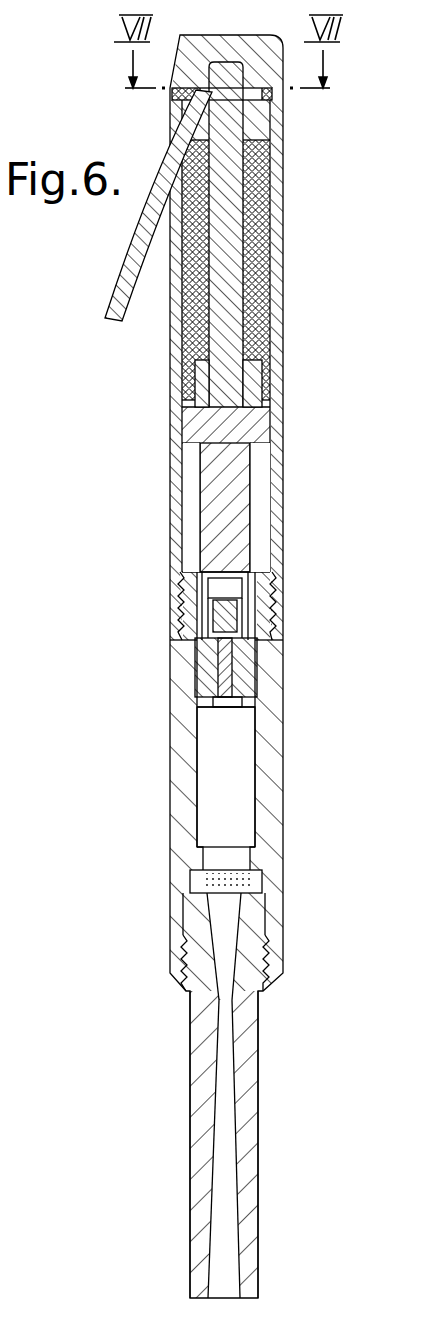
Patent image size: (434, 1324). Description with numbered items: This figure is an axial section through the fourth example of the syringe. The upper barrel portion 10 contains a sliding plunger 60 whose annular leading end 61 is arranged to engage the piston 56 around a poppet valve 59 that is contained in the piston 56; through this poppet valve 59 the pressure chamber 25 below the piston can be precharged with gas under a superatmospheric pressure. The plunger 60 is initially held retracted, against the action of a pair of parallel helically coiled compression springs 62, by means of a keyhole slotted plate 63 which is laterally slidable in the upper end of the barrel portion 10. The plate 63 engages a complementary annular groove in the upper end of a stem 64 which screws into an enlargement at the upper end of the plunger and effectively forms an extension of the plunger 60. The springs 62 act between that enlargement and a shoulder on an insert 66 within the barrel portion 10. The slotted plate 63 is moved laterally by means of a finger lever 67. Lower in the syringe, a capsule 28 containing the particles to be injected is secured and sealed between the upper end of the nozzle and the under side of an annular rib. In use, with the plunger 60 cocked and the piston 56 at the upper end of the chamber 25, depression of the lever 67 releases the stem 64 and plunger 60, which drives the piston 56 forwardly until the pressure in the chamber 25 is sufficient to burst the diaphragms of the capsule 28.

The upper barrel portion 10 is at (283, 500).
The pressure chamber 25 is at (233, 798).
The capsule 28 is at (200, 882).
The piston 56 is at (243, 669).
The poppet valve 59 is at (217, 710).
The sliding plunger 60 is at (228, 548).
The annular leading end 61 is at (244, 612).
The helically coiled compression springs 62 is at (280, 262).
The keyhole slotted plate 63 is at (178, 93).
The stem 64 is at (223, 333).
The insert 66 is at (257, 127).
The finger lever 67 is at (132, 238).